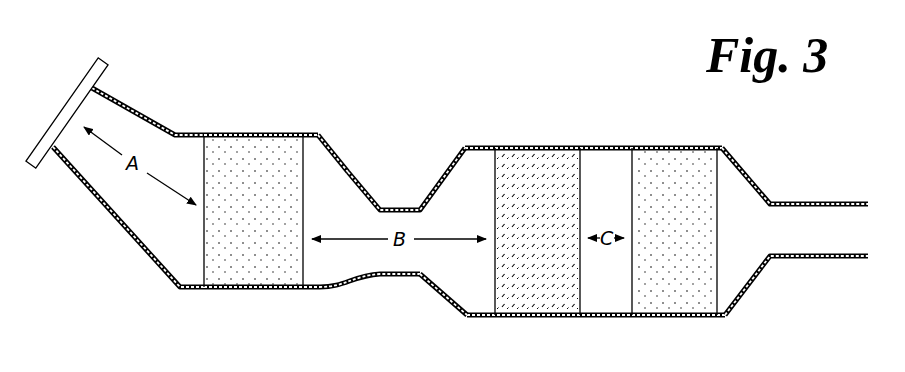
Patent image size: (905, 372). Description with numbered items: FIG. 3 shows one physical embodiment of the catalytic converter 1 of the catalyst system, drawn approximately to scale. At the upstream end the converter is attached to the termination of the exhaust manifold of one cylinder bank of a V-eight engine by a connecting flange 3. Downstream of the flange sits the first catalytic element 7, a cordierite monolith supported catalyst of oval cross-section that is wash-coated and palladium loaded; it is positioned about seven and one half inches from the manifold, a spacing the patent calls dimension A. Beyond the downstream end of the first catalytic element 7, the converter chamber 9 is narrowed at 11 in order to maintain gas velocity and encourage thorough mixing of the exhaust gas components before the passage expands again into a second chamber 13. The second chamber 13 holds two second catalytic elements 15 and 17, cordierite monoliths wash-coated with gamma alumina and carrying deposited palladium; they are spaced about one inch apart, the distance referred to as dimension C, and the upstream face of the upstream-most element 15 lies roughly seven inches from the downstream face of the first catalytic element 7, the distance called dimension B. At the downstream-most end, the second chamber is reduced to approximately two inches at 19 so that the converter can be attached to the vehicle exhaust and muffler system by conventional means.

The catalytic converter 1 is at (447, 191).
The connecting flange 3 is at (104, 63).
The first catalytic element 7 is at (262, 143).
The converter chamber 9 is at (322, 157).
The narrowed portion 11 is at (393, 216).
The second chamber 13 is at (477, 292).
The second catalytic element 15 is at (517, 157).
The second catalytic element 17 is at (660, 157).
The reduced downstream end 19 is at (826, 233).